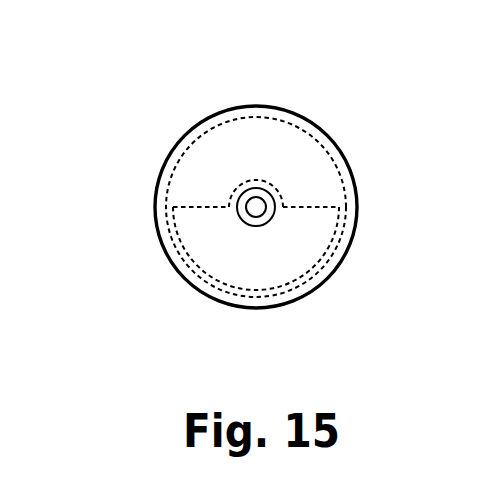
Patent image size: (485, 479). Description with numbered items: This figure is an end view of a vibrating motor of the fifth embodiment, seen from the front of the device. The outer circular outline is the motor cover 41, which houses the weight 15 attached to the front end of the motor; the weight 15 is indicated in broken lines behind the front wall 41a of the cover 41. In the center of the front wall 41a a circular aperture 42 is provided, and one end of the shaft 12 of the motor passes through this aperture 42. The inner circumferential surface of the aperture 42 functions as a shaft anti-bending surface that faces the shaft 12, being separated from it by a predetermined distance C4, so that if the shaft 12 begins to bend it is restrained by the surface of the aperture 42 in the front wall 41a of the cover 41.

The motor cover 41 is at (325, 138).
The front wall 41a is at (253, 135).
The weight 15 is at (358, 208).
The shaft 12 is at (238, 212).
The circular aperture 42 is at (244, 223).
The predetermined distance C4 is at (267, 217).